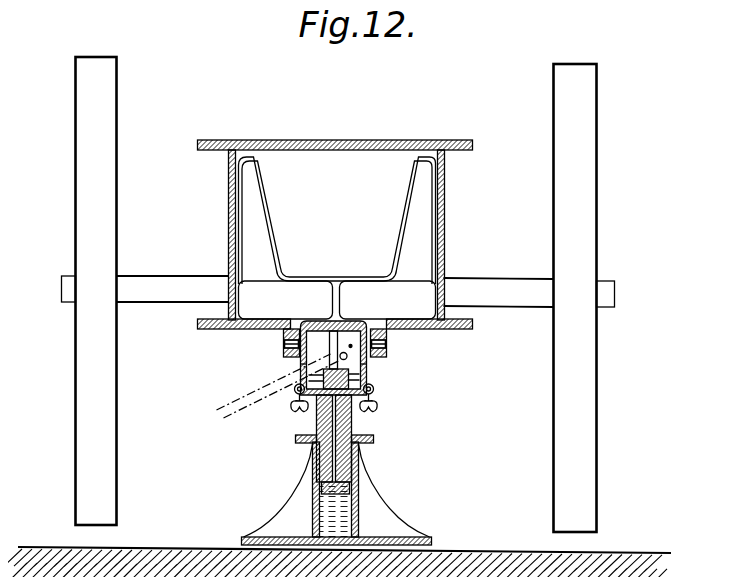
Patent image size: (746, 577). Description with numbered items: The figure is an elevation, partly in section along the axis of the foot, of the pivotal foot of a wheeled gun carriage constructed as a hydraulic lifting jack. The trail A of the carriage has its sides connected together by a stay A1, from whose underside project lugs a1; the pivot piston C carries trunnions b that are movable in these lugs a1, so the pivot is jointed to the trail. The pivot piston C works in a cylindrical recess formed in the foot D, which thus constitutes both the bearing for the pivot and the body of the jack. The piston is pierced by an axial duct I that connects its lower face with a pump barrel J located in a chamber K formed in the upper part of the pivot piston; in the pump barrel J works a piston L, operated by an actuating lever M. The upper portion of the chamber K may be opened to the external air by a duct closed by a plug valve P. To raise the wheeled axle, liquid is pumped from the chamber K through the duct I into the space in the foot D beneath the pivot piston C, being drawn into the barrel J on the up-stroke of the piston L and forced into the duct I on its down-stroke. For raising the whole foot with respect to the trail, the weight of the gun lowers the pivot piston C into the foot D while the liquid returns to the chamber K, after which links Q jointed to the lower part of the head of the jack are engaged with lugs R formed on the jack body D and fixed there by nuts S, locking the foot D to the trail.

The trail A is at (225, 205).
The stay A1 is at (253, 223).
The trunnions b is at (285, 326).
The chamber K is at (311, 326).
The plug valve P is at (351, 328).
The lugs a1 is at (404, 358).
The pump barrel J is at (298, 367).
The piston L is at (358, 377).
The actuating lever M is at (218, 405).
The links Q is at (291, 390).
The nuts S is at (291, 406).
The axial duct I is at (352, 458).
The lugs R is at (294, 437).
The pivot piston C is at (311, 459).
The foot D is at (352, 507).